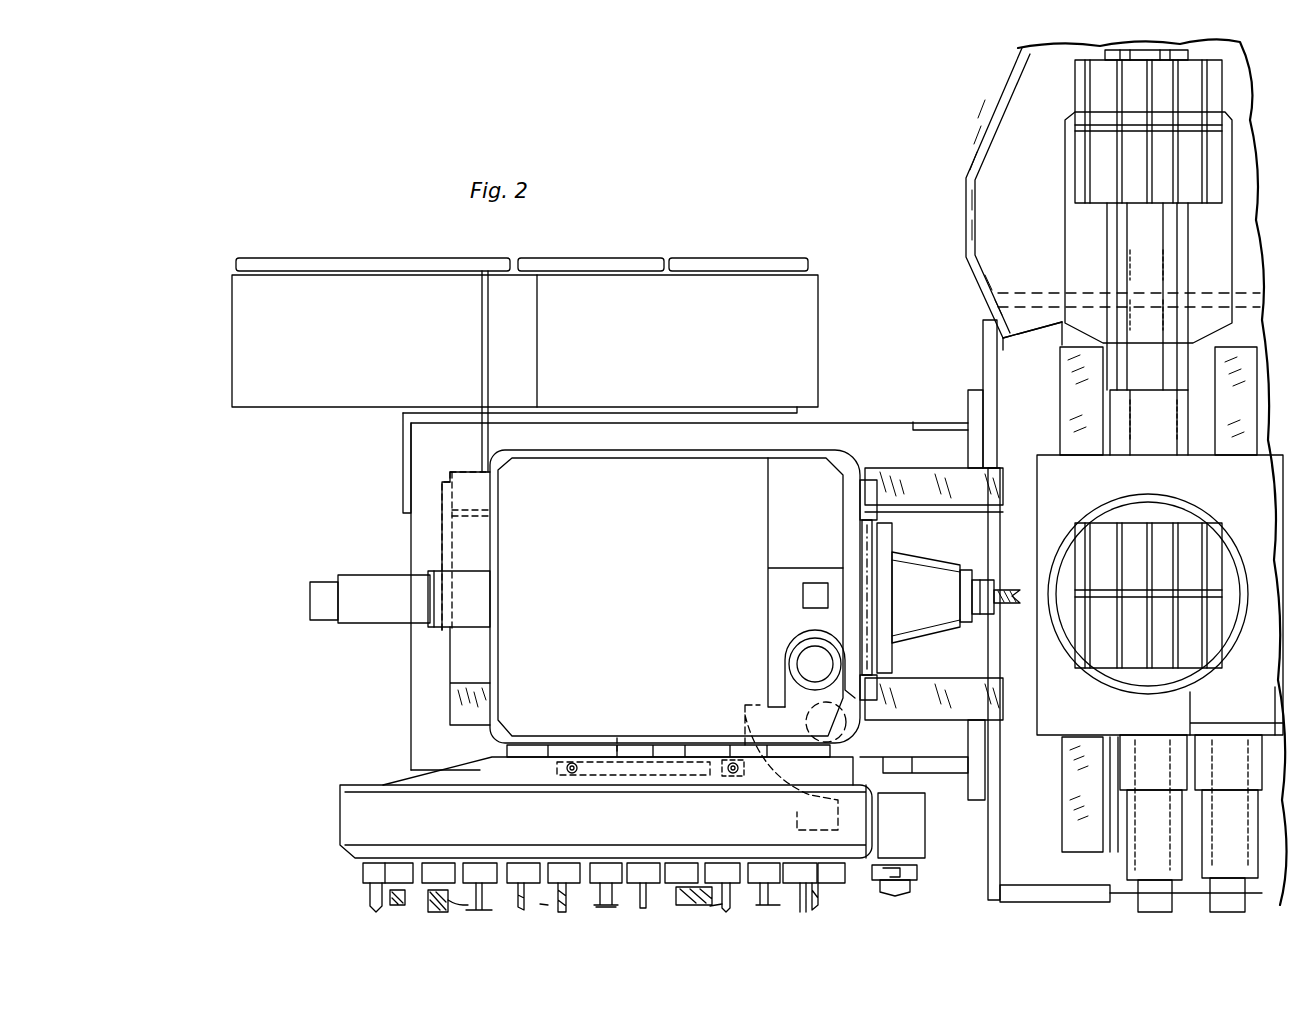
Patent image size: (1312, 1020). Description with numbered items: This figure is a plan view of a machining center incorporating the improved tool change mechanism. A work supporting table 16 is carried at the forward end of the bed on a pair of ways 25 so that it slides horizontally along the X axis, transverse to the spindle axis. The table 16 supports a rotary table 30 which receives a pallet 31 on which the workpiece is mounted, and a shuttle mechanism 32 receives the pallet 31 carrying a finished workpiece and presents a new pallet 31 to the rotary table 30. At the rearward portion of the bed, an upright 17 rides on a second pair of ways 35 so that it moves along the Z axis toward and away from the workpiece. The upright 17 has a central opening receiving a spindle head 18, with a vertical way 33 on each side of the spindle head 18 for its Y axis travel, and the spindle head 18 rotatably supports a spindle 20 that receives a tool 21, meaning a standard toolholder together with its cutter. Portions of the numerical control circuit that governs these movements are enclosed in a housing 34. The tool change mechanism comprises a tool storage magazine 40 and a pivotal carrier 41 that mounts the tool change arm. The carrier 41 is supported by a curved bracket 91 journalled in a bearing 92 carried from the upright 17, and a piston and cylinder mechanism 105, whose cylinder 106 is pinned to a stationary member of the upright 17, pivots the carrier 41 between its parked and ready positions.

The work supporting table 16 is at (1055, 482).
The upright 17 is at (600, 487).
The spindle head 18 is at (908, 573).
The spindle 20 is at (972, 580).
The tool 21 is at (988, 617).
The ways 25 is at (1063, 382).
The rotary table 30 is at (1232, 562).
The pallet 31 is at (1102, 97).
The shuttle mechanism 32 is at (962, 120).
The vertical ways 33 is at (862, 512).
The housing 34 is at (255, 348).
The ways 35 is at (942, 486).
The tool storage magazine 40 is at (314, 838).
The pivotal carrier 41 is at (936, 847).
The curved bracket 91 is at (748, 710).
The bearing 92 is at (848, 724).
The piston and cylinder mechanism 105 is at (672, 797).
The cylinder 106 is at (618, 735).